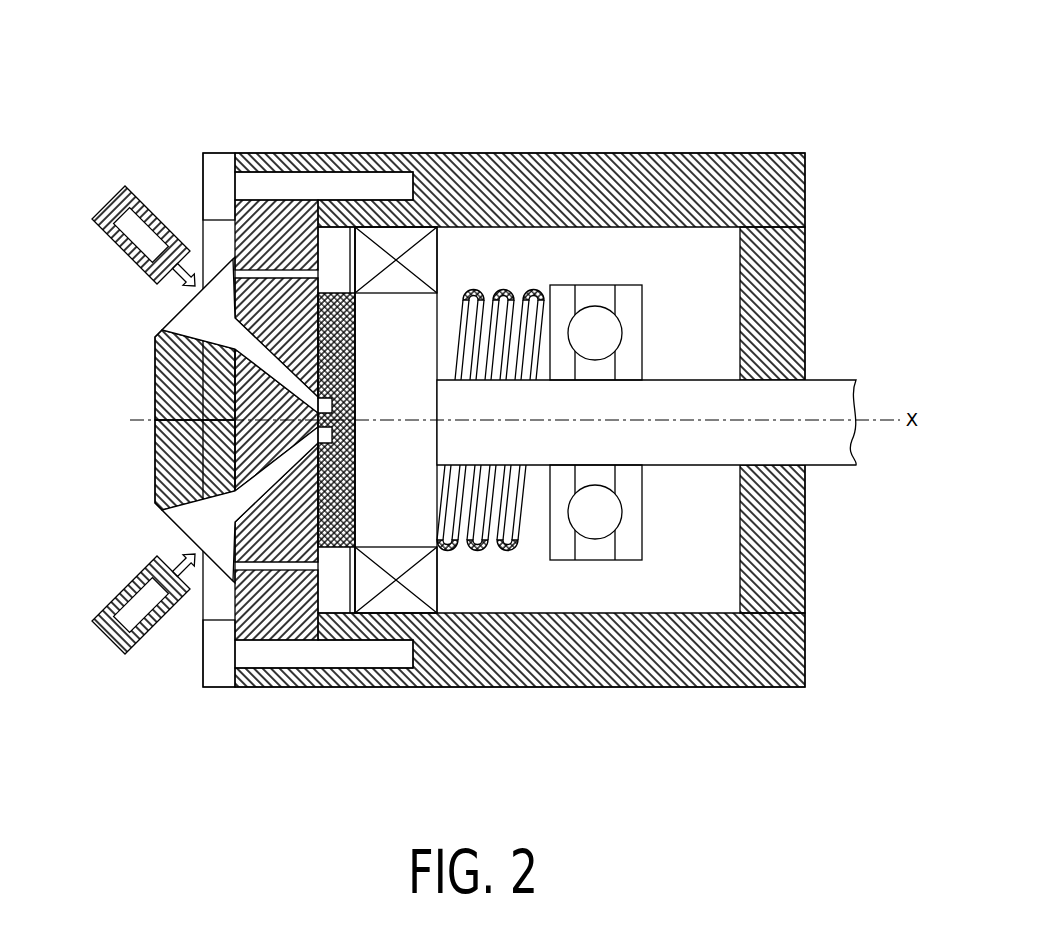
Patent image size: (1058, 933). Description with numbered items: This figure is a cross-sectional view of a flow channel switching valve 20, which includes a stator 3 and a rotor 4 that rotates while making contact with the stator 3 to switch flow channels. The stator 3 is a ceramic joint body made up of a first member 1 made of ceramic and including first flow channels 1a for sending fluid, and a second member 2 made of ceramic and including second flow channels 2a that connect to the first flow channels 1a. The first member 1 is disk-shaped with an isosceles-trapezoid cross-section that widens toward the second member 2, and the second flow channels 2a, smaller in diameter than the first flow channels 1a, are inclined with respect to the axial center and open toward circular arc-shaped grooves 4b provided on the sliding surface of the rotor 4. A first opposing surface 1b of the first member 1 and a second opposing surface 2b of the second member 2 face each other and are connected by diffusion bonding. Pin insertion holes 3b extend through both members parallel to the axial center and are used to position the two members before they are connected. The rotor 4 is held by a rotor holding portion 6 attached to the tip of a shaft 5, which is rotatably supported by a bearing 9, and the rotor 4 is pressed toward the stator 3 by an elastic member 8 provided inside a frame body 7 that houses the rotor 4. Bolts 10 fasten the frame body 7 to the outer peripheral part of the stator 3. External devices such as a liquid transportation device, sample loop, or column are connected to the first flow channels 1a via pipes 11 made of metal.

The flow channel switching valve 20 is at (846, 118).
The stator 3 is at (197, 70).
The pin insertion holes 3b is at (289, 265).
The bolts 10 is at (402, 182).
The frame body 7 is at (762, 215).
The second member 2 is at (248, 153).
The second flow channels 2a is at (160, 498).
The second opposing surface 2b is at (215, 372).
The circular arc-shaped grooves 4b is at (210, 438).
The first member 1 is at (163, 327).
The first flow channels 1a is at (186, 530).
The first opposing surface 1b is at (340, 555).
The rotor 4 is at (342, 240).
The rotor holding portion 6 is at (408, 504).
The shaft 5 is at (832, 410).
The elastic member 8 is at (502, 288).
The bearing 9 is at (598, 318).
The pipes 11 is at (125, 212).